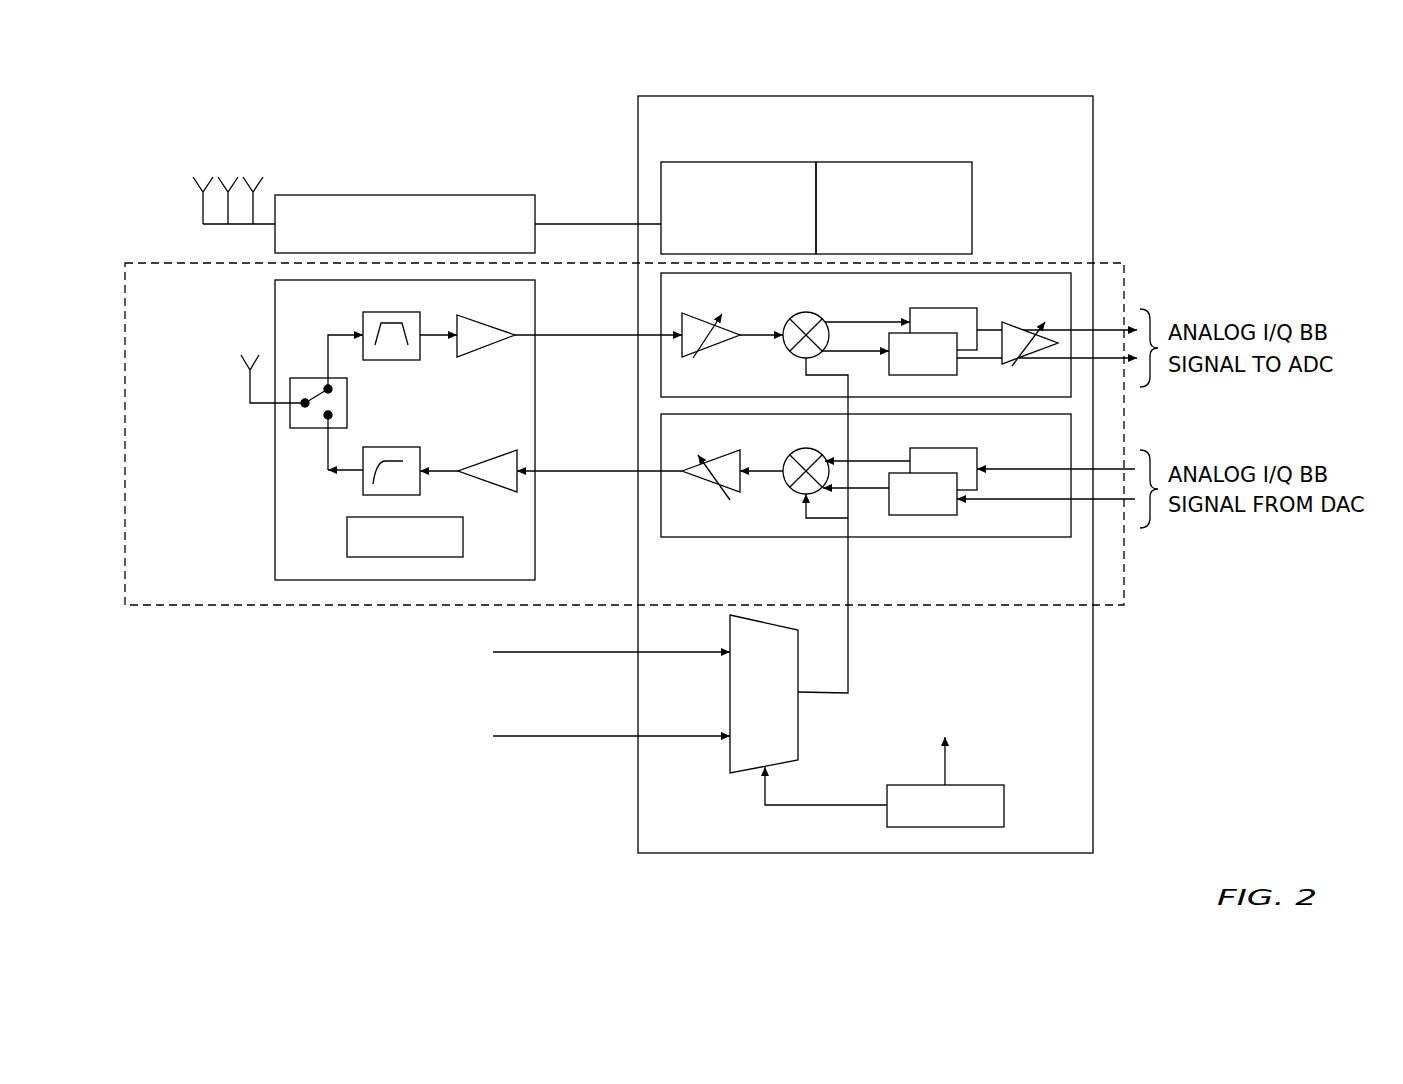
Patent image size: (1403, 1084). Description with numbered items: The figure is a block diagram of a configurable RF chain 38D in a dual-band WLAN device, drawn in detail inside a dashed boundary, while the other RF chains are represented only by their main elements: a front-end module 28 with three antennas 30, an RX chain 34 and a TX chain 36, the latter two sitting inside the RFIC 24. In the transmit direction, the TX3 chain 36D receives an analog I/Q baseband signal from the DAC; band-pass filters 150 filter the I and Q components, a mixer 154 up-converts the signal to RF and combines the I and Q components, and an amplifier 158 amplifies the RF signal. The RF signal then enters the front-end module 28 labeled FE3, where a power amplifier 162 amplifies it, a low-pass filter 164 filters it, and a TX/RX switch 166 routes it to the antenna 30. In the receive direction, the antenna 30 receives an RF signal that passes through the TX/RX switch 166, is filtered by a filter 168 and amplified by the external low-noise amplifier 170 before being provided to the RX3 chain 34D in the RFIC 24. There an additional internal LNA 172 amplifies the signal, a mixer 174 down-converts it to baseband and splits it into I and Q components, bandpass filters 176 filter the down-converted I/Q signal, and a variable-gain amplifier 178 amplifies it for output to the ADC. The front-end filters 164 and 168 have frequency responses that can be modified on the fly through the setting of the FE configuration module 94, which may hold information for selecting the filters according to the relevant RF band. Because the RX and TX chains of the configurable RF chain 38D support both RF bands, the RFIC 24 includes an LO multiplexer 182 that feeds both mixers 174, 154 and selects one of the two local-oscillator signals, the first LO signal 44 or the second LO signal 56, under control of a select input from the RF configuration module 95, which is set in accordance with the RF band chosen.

The RFIC 24 is at (1093, 170).
The front-end module 28 is at (398, 195).
The antenna 30 is at (253, 177).
The RX chain 34 is at (738, 208).
The TX chain 36 is at (894, 208).
The RX3 chain 34D is at (1071, 285).
The TX3 chain 36D is at (1032, 537).
The configurable RF chain 38D is at (180, 605).
The LO signal LOX_0 44 is at (555, 737).
The LO signal LOX_1 56 is at (560, 655).
The FE configuration module 94 is at (370, 557).
The RF configuration module 95 is at (1004, 805).
The band-pass filters 150 is at (930, 448).
The mixer 154 is at (790, 490).
The amplifier 158 is at (705, 482).
The power amplifier 162 is at (490, 492).
The low-pass filter 164 is at (395, 447).
The TX/RX switch 166 is at (305, 428).
The filter 168 is at (390, 360).
The low-noise amplifier 170 is at (495, 350).
The additional LNA 172 is at (718, 344).
The mixer 174 is at (797, 315).
The bandpass filters 176 is at (921, 308).
The variable-gain amplifier 178 is at (1003, 321).
The LO multiplexer 182 is at (798, 725).